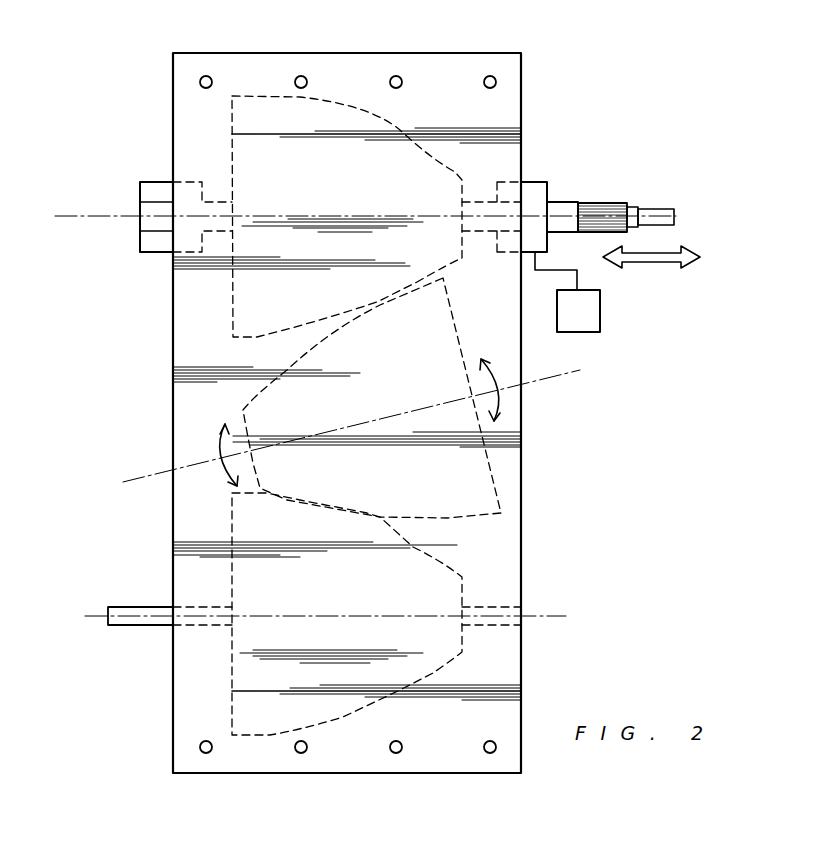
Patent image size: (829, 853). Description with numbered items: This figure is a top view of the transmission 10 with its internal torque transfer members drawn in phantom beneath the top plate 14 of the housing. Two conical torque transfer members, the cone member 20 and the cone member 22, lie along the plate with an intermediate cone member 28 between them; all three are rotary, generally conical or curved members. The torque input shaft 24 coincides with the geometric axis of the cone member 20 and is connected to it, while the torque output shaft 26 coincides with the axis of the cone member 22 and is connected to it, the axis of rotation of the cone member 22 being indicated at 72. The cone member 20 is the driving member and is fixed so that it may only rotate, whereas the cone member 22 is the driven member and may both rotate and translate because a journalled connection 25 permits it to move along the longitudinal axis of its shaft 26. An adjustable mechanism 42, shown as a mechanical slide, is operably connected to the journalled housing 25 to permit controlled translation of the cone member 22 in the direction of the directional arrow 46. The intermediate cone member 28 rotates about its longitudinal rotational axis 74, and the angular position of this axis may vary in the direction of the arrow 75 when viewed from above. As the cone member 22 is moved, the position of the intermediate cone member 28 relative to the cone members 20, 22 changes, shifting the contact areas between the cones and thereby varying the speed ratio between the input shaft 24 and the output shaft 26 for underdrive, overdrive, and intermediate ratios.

The transmission assembly 10 is at (599, 50).
The top plate 14 is at (357, 196).
The cone member 20 is at (342, 715).
The cone member 22 is at (435, 153).
The torque input shaft 24 is at (140, 607).
The journalled connection 25 is at (160, 182).
The torque output shaft 26 is at (563, 202).
The intermediate cone member 28 is at (495, 475).
The adjustable mechanism 42 is at (591, 322).
The directional arrow 46 is at (652, 263).
The axis of rotation 72 is at (661, 209).
The longitudinal rotational axis 74 is at (553, 377).
The arrow 75 is at (218, 448).